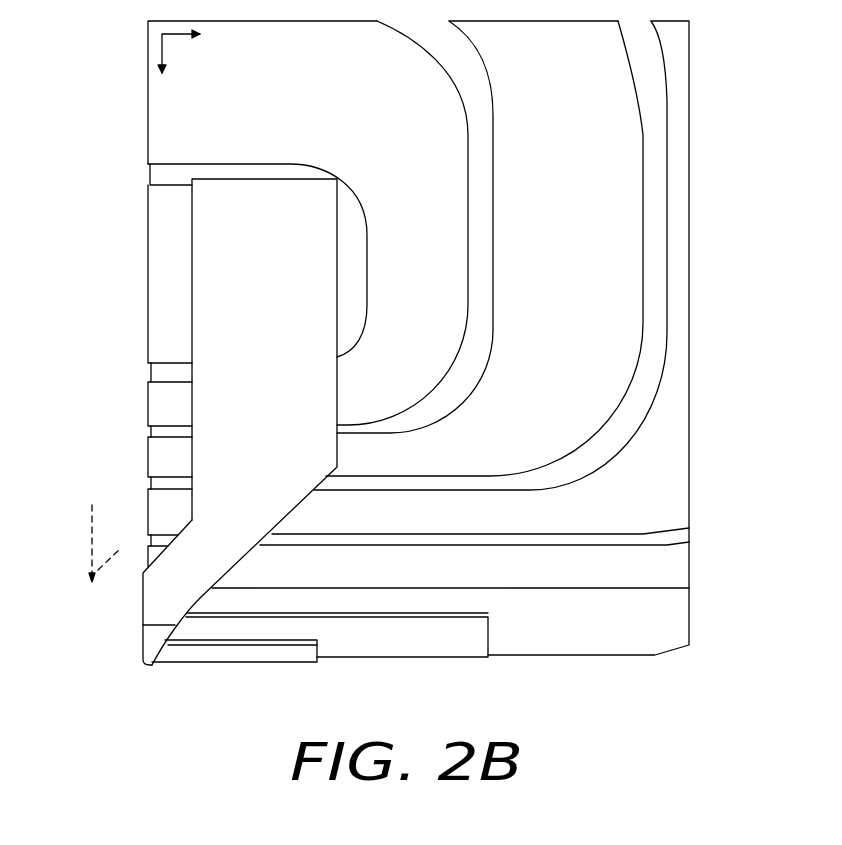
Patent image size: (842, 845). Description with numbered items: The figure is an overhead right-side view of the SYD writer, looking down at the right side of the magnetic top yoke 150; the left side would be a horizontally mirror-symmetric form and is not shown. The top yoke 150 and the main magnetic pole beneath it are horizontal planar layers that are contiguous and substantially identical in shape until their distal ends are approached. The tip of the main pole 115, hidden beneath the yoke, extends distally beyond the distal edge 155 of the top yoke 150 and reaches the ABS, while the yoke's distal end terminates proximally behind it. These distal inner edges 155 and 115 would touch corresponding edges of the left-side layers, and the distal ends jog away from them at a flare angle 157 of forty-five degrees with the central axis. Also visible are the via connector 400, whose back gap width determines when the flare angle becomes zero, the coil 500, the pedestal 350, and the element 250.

The distal end of the main pole 115 is at (152, 647).
The magnetic top yoke 150 is at (213, 311).
The distal edge of the top yoke 155 is at (152, 605).
The flare angle 157 is at (102, 545).
The support plate 250 is at (207, 655).
The pedestal 350 is at (365, 645).
The via connector 400 is at (160, 259).
The coil 500 is at (675, 484).